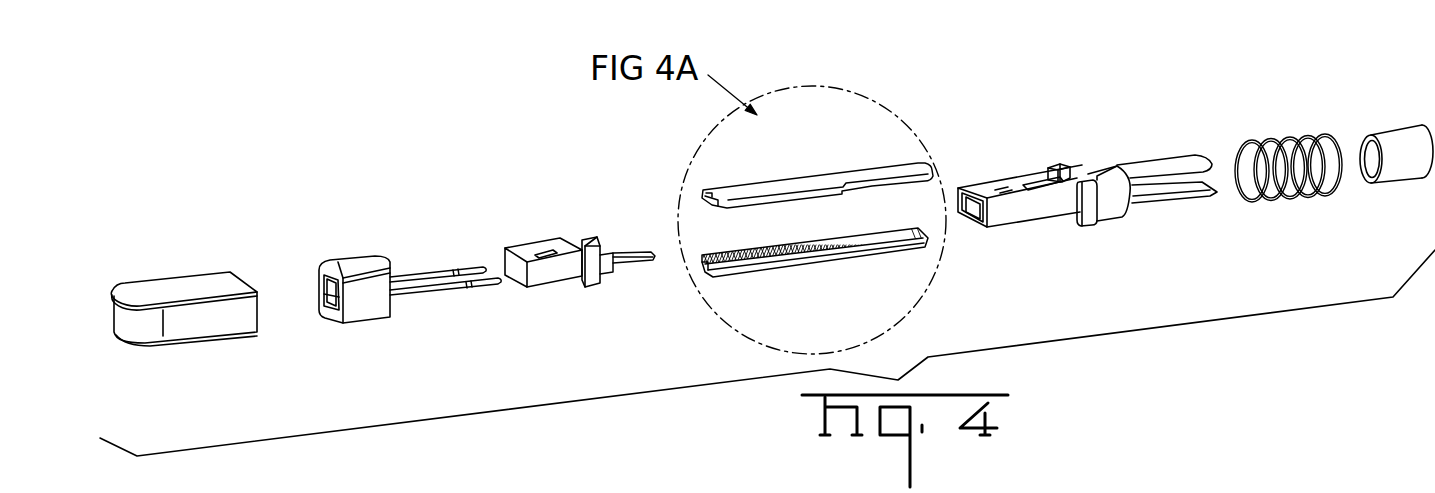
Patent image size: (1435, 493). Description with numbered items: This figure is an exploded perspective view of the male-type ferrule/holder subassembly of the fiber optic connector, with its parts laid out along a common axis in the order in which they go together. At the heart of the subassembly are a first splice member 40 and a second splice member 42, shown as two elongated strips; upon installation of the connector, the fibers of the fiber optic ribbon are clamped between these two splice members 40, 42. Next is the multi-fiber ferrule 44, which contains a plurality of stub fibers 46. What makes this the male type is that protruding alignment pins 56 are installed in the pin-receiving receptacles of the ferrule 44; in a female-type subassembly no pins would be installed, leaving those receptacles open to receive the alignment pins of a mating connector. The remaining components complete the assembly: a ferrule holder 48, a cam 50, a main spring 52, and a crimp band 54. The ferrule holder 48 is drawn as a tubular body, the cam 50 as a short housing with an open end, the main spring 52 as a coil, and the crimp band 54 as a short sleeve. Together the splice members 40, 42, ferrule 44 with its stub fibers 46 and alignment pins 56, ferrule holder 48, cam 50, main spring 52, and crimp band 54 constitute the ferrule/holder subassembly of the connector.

The first splice member 40 is at (918, 250).
The second splice member 42 is at (842, 170).
The multi-fiber ferrule 44 is at (558, 273).
The stub fibers 46 is at (632, 252).
The ferrule holder 48 is at (1105, 170).
The cam 50 is at (353, 260).
The main spring 52 is at (1282, 138).
The crimp band 54 is at (1395, 140).
The alignment pins 56 is at (458, 267).